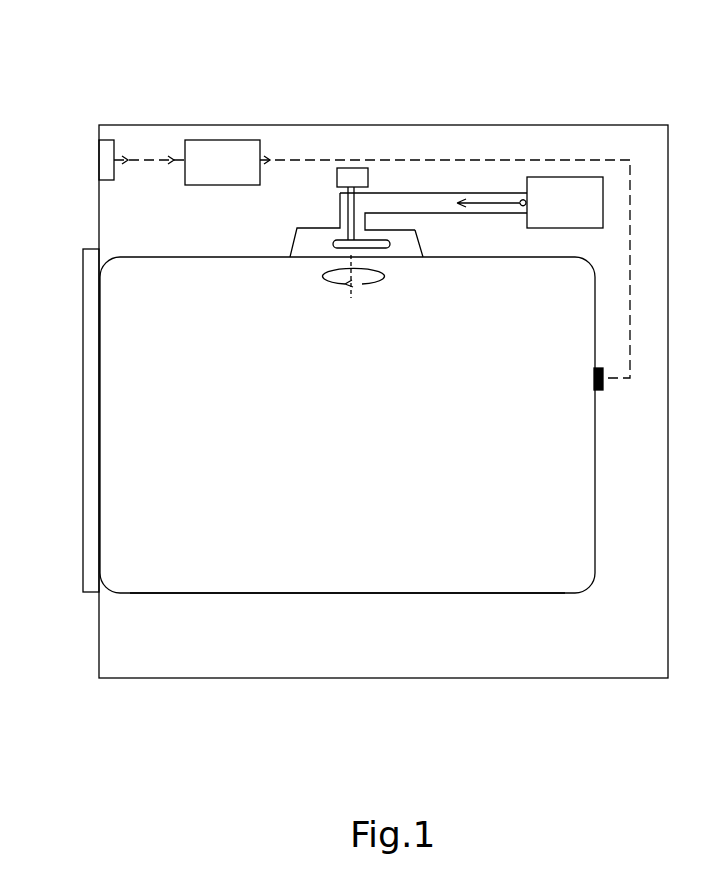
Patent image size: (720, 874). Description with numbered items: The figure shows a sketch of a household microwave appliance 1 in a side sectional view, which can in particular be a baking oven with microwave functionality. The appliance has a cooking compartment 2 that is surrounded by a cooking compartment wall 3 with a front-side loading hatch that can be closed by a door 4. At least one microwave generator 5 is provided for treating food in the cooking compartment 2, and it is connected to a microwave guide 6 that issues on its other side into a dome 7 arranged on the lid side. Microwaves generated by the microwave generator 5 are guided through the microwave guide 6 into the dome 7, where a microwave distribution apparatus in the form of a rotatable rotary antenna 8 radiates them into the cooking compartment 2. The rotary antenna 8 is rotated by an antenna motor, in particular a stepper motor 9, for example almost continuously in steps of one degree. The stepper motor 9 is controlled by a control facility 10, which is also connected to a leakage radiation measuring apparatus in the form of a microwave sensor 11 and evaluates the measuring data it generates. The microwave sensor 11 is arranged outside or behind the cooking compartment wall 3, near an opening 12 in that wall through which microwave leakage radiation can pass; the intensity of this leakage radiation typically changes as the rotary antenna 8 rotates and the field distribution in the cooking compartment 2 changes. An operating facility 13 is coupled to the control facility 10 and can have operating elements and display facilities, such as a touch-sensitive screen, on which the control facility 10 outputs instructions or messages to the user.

The household microwave appliance 1 is at (117, 68).
The cooking compartment 2 is at (115, 468).
The cooking compartment wall 3 is at (186, 597).
The door 4 is at (83, 420).
The microwave generator 5 is at (565, 177).
The microwave guide 6 is at (428, 193).
The dome 7 is at (290, 245).
The rotary antenna 8 is at (380, 257).
The stepper motor 9 is at (353, 168).
The control facility 10 is at (222, 140).
The microwave sensor 11 is at (599, 392).
The opening 12 is at (578, 380).
The operating facility 13 is at (100, 178).